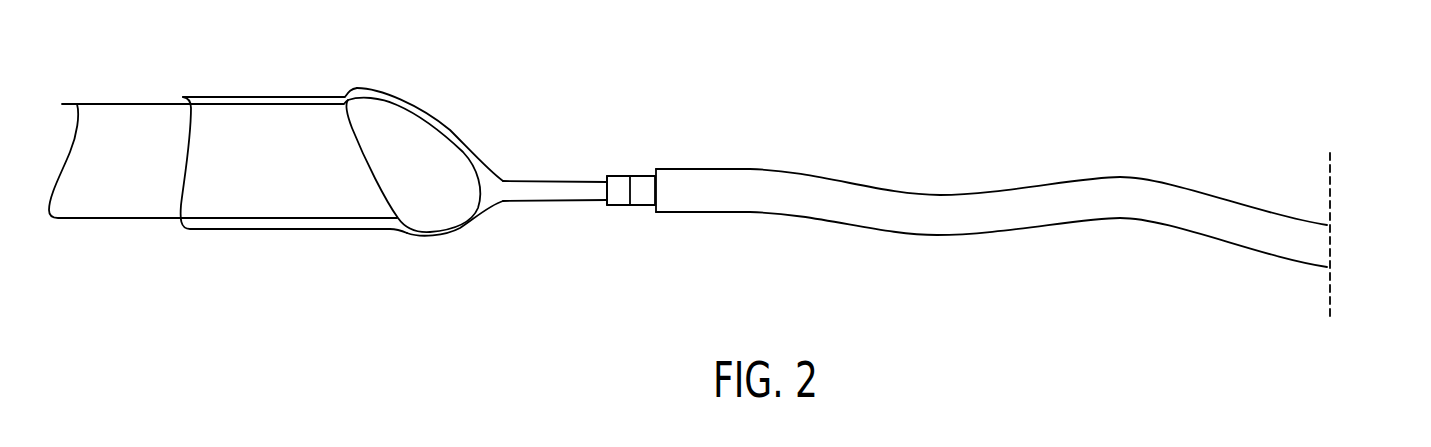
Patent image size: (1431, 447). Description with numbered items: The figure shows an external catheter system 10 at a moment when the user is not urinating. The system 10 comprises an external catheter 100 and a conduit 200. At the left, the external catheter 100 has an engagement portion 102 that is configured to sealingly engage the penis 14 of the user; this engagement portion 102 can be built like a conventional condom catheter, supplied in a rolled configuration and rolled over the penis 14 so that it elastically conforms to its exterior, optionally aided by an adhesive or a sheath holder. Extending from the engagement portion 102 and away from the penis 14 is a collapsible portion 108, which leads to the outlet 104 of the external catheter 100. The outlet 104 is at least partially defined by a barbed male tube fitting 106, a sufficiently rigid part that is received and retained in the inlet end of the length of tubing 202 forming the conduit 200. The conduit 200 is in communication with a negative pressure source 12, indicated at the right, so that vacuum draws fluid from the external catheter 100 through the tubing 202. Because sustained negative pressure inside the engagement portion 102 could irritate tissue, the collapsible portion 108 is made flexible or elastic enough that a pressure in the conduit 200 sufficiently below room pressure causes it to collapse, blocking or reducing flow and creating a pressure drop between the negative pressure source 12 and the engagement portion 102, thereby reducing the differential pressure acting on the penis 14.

The system 10 is at (420, 256).
The negative pressure source 12 is at (1339, 243).
The penis 14 is at (125, 202).
The external catheter 100 is at (443, 120).
The engagement portion 102 is at (340, 231).
The outlet 104 is at (627, 192).
The barbed male tube fitting 106 is at (642, 200).
The collapsible portion 108 is at (532, 181).
The conduit 200 is at (991, 199).
The tubing 202 is at (983, 220).